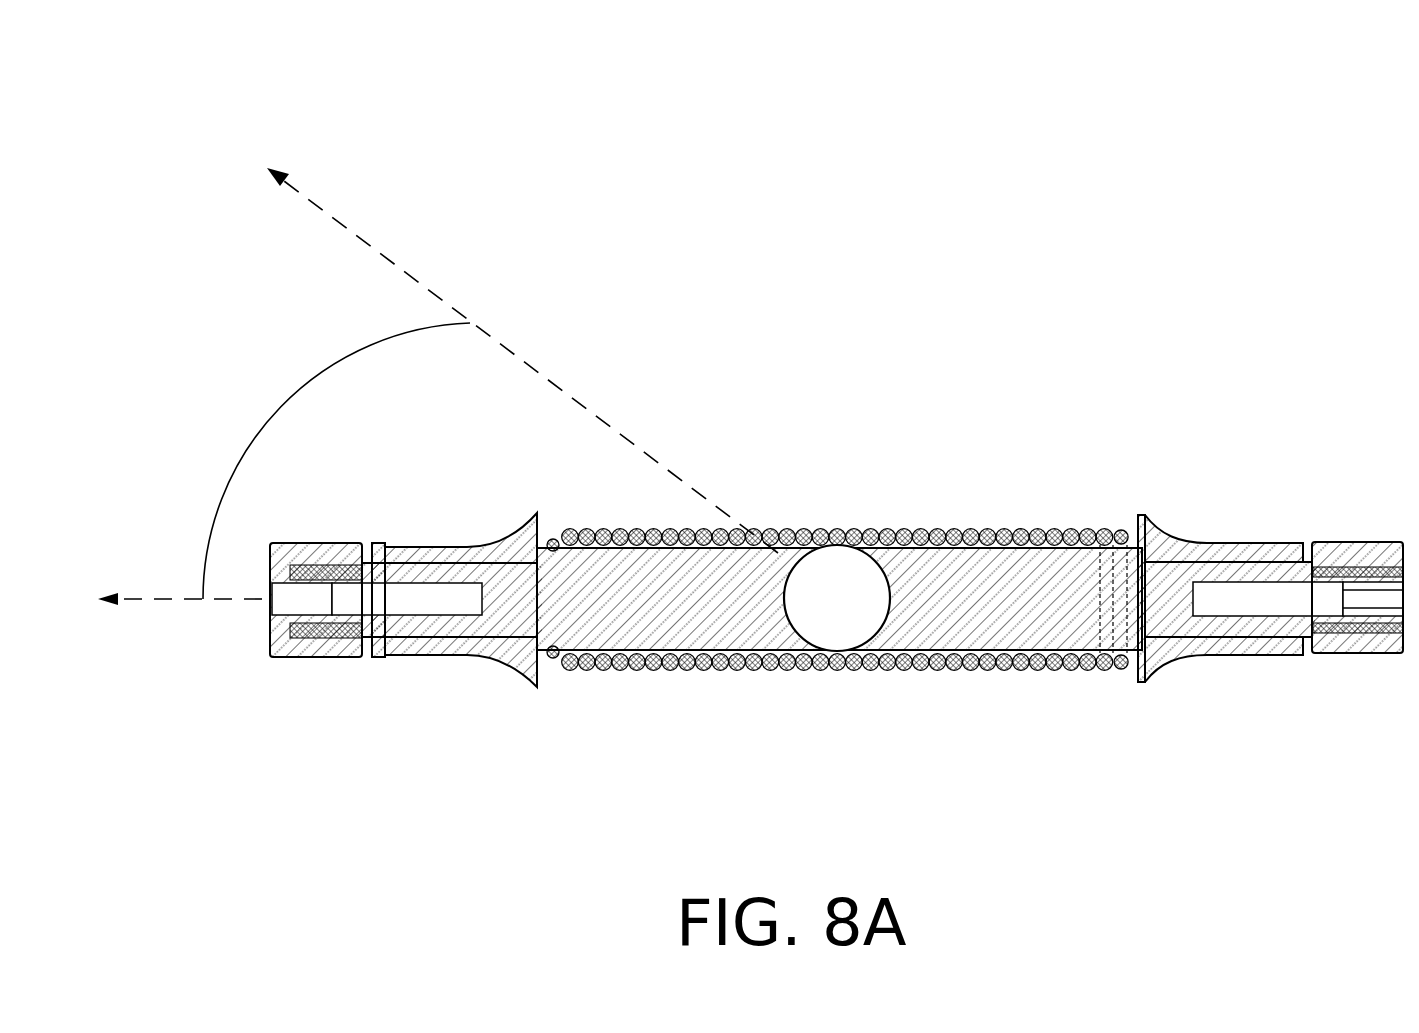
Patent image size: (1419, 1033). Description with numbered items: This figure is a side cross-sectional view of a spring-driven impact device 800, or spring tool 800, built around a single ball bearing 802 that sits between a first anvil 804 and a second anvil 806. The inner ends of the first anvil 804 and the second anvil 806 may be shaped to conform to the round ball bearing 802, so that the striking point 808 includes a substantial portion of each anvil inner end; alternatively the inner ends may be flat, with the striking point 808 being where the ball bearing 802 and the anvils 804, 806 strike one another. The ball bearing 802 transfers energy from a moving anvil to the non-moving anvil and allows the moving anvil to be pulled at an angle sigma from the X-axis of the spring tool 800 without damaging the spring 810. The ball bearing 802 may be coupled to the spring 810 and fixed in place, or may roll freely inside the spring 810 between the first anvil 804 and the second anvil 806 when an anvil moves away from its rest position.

The spring-driven impact device 800 is at (170, 67).
The ball bearing 802 is at (835, 560).
The first anvil 804 is at (725, 573).
The second anvil 806 is at (1035, 570).
The striking point 808 is at (786, 604).
The spring 810 is at (640, 667).